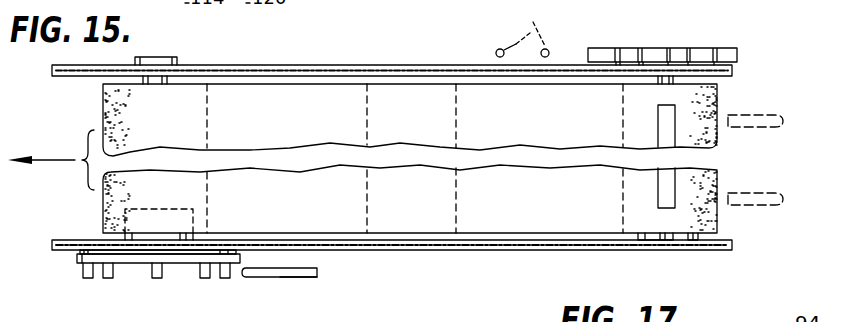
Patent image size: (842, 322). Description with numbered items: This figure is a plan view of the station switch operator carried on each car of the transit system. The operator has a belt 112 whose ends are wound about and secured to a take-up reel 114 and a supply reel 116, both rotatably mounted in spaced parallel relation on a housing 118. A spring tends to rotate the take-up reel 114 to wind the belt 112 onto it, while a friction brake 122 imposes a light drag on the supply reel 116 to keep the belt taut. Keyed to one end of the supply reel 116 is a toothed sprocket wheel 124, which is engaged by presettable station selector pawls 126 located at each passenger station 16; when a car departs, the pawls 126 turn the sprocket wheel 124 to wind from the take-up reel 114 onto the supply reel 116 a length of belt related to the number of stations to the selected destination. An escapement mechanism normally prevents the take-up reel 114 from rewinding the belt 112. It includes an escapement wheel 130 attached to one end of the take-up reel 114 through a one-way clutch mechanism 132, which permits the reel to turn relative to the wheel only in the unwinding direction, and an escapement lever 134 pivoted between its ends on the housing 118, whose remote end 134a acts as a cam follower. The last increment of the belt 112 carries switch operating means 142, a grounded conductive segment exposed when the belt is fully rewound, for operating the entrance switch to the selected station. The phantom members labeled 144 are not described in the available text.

The passenger station 16 is at (492, 47).
The belt 112 is at (479, 228).
The take-up reel 114 is at (103, 100).
The supply reel 116 is at (687, 241).
The housing 118 is at (362, 252).
The friction brake 122 is at (672, 241).
The toothed sprocket wheel 124 is at (697, 47).
The station selector pawls 126 is at (533, 22).
The escapement wheel 130 is at (78, 257).
The one-way clutch mechanism 132 is at (125, 218).
The escapement lever 134 is at (260, 284).
The end of escapement lever 134a is at (297, 279).
The switch operating means 142 is at (668, 185).
The phantom member 144 is at (737, 112).